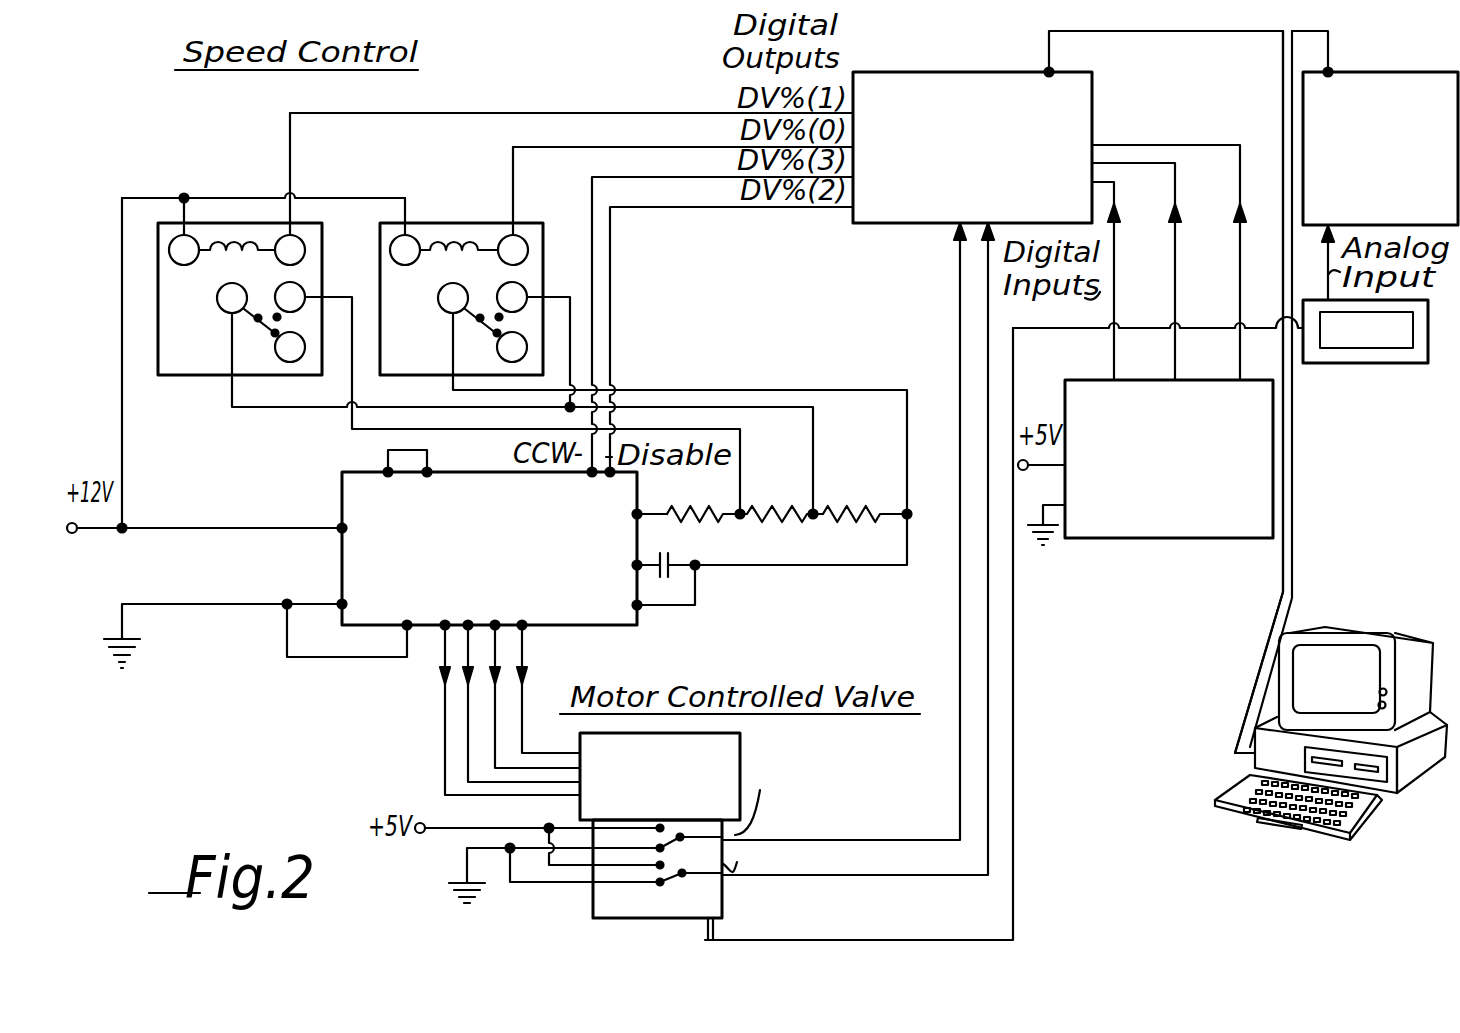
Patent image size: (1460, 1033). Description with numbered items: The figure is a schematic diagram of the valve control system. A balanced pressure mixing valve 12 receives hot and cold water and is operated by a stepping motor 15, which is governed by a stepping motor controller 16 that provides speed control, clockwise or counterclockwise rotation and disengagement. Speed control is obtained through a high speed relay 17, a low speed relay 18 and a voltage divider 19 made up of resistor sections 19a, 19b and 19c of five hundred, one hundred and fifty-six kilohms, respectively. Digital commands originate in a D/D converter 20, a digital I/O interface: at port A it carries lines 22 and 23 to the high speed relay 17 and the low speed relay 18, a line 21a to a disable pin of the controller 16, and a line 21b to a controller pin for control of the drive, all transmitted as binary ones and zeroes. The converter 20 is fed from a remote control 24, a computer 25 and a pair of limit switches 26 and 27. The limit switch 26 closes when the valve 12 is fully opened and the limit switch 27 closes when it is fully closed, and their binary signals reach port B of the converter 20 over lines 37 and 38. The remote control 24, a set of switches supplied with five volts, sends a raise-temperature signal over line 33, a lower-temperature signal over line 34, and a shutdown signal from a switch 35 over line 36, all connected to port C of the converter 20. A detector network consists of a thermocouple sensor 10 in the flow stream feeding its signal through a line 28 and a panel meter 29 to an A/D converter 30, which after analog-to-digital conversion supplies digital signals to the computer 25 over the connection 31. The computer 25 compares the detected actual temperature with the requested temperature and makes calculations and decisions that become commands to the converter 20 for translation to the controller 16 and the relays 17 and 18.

The sensor 10 is at (715, 930).
The balanced pressure mixing valve 12 is at (597, 887).
The stepping motor 15 is at (740, 745).
The stepping motor controller 16 is at (582, 620).
The high speed relay 17 is at (250, 232).
The low speed relay 18 is at (485, 232).
The voltage divider 19 is at (796, 540).
The resistor section 19a is at (840, 520).
The resistor section 19b is at (790, 520).
The resistor section 19c is at (723, 520).
The D/D converter 20 is at (895, 223).
The line 21a is at (760, 207).
The line 21b is at (693, 177).
The line 22 is at (614, 117).
The line 23 is at (670, 147).
The remote control 24 is at (1170, 485).
The computer 25 is at (1402, 775).
The limit switch 26 is at (672, 845).
The limit switch 27 is at (674, 878).
The line 28 is at (1013, 892).
The panel meter 29 is at (1412, 364).
The A/D converter 30 is at (1413, 72).
The computer cable 31 is at (1262, 667).
The line 33 is at (1114, 365).
The line 34 is at (1175, 350).
The switch 35 is at (1222, 418).
The line 36 is at (1242, 355).
The line 37 is at (960, 315).
The line 38 is at (988, 348).